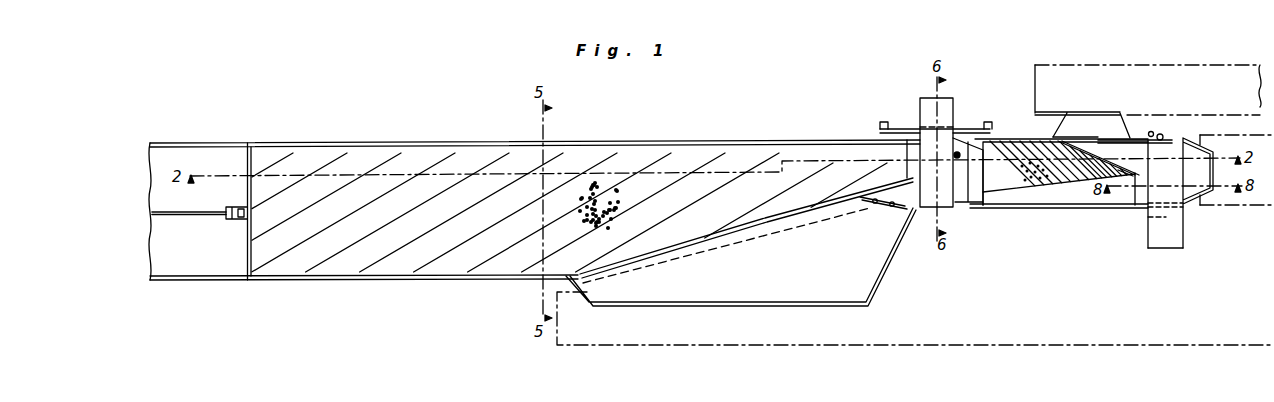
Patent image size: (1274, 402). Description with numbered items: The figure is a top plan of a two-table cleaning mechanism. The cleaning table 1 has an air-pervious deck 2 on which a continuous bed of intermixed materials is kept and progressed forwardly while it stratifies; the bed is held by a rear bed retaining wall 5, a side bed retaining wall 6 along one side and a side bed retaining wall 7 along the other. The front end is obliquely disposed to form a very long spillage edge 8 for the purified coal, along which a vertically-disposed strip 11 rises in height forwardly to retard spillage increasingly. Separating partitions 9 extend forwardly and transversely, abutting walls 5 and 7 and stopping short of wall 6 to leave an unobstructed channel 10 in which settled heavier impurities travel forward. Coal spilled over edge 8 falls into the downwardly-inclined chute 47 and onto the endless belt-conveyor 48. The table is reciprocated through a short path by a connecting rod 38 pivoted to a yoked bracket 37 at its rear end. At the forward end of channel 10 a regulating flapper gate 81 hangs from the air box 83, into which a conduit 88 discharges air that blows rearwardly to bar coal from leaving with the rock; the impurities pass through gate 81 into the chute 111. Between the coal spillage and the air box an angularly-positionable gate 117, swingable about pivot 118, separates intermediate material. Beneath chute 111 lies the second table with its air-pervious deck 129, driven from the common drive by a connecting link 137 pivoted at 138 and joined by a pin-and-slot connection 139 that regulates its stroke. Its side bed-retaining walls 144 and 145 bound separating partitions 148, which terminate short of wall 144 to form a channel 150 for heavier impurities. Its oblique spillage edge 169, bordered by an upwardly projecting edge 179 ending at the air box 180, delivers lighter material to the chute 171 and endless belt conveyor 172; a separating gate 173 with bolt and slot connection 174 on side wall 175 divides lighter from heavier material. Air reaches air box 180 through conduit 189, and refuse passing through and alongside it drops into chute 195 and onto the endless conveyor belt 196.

The cleaning table 1 is at (343, 142).
The air-pervious deck 2 is at (604, 185).
The rear bed retaining wall 5 is at (247, 147).
The side bed retaining wall 6 is at (462, 145).
The side bed retaining wall 7 is at (437, 281).
The spillage edge 8 is at (766, 225).
The separating partitions 9 is at (405, 205).
The channel 10 is at (592, 150).
The vertically-disposed strip 11 is at (658, 252).
The yoked bracket 37 is at (234, 220).
The connecting rod 38 is at (174, 216).
The downwardly-inclined chute 47 is at (760, 303).
The endless belt-conveyor 48 is at (950, 346).
The regulating flapper gate 81 is at (960, 162).
The air box 83 is at (926, 153).
The conduit 88 is at (945, 105).
The chute 111 is at (962, 202).
The angularly-positionable gate 117 is at (866, 201).
The pivot 118 is at (910, 212).
The air-pervious deck 129 is at (1040, 192).
The connecting link 137 is at (905, 129).
The pivot 138 is at (989, 128).
The pin-and-slot connection 139 is at (882, 127).
The side bed-retaining wall 144 is at (1025, 200).
The side bed-retaining wall 145 is at (1013, 138).
The separating partitions 148 is at (1068, 205).
The channel 150 is at (1005, 210).
The spillage edge 169 is at (1056, 126).
The chute 171 is at (1078, 112).
The endless belt conveyor 172 is at (1188, 63).
The separating gate 173 is at (1118, 144).
The bolt and slot connection 174 is at (1162, 137).
The side wall 175 is at (1151, 133).
The upwardly projecting edge 179 is at (1133, 168).
The air box 180 is at (1158, 190).
The conduit 189 is at (1186, 238).
The chute 195 is at (1192, 200).
The endless conveyor belt 196 is at (1236, 207).